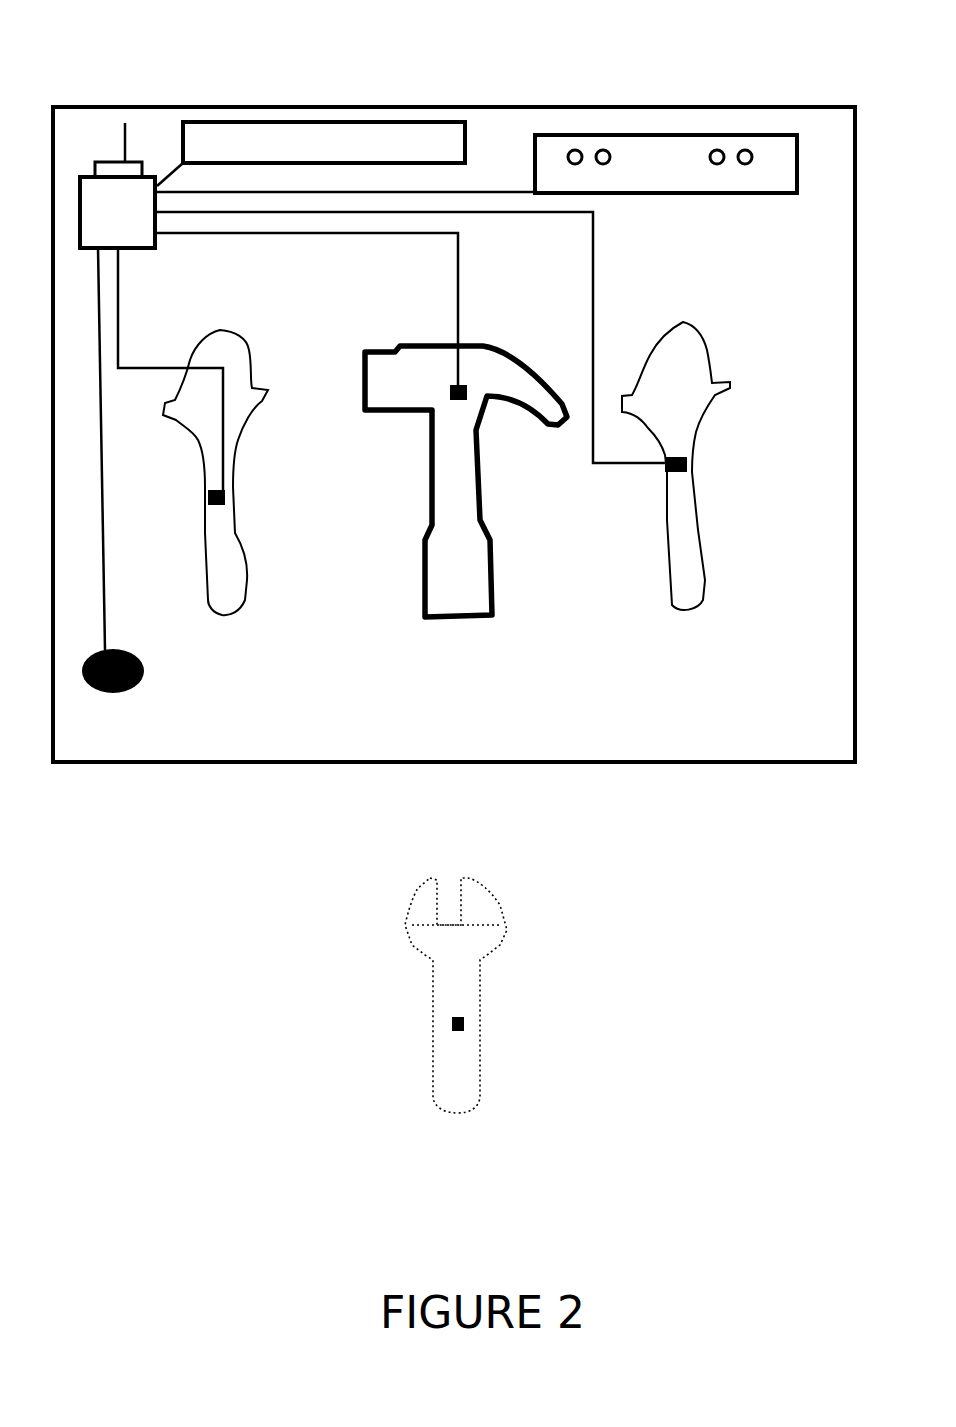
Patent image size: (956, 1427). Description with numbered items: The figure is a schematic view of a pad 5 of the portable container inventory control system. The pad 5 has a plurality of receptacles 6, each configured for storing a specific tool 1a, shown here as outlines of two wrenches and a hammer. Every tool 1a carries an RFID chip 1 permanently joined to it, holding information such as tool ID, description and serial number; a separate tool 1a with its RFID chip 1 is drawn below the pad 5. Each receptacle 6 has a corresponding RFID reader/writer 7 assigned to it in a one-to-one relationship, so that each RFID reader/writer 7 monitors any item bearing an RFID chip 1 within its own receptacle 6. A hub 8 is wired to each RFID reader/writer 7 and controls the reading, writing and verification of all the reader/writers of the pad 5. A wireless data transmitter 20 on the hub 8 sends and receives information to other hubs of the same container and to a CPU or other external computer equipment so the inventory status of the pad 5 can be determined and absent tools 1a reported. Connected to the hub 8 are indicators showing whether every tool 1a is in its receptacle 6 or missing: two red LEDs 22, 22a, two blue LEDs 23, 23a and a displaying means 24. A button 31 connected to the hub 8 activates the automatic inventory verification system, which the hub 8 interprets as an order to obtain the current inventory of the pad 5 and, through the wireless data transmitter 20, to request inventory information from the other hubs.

The RFID chip 1 is at (474, 1025).
The tool 1a is at (430, 955).
The pad 5 is at (454, 434).
The receptacle 6 is at (446, 469).
The RFID reader/writer 7 is at (232, 497).
The hub 8 is at (373, 406).
The wireless data transmitter 20 is at (112, 162).
The red LED 22 is at (565, 148).
The blue LED 23 is at (598, 148).
The red LED 22a is at (721, 148).
The blue LED 23a is at (755, 148).
The displaying means 24 is at (324, 142).
The button 31 is at (100, 694).